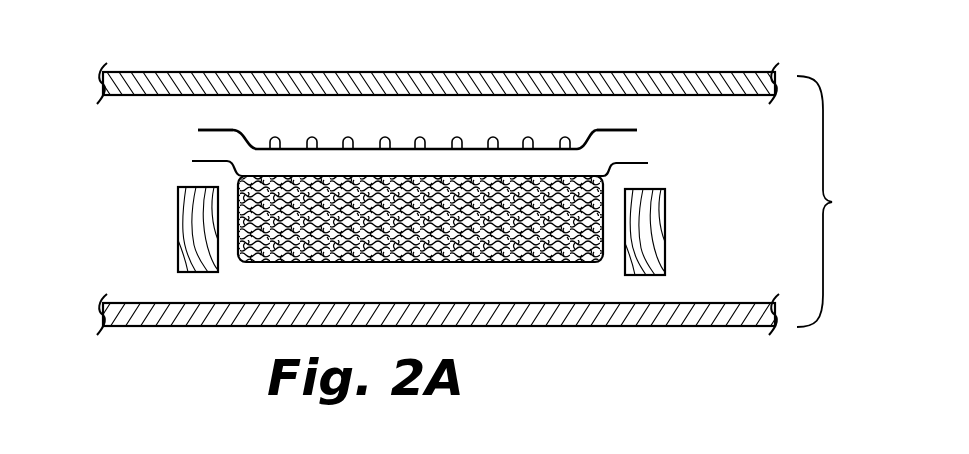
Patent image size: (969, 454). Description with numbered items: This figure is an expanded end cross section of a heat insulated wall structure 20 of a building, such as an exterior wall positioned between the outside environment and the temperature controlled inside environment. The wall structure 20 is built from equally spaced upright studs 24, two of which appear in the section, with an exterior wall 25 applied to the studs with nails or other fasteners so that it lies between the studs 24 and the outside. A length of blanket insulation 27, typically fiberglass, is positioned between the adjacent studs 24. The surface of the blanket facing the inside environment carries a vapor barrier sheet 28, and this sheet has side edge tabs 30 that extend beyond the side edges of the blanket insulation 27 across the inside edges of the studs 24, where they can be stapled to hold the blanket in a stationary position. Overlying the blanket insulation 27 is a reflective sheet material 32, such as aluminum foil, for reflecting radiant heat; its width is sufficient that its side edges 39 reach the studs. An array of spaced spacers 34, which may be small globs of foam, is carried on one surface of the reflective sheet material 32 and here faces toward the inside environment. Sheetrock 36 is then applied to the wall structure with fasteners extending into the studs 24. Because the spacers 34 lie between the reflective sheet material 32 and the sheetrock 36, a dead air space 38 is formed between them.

The wall structure 20 is at (833, 201).
The upright studs 24 is at (178, 233).
The exterior wall 25 is at (565, 323).
The blanket insulation 27 is at (433, 231).
The vapor barrier sheet 28 is at (293, 175).
The side edge tabs 30 is at (210, 162).
The reflective sheet material 32 is at (472, 148).
The spacers 34 is at (420, 137).
The sheetrock 36 is at (600, 82).
The dead air space 38 is at (535, 117).
The side edges 39 is at (212, 131).